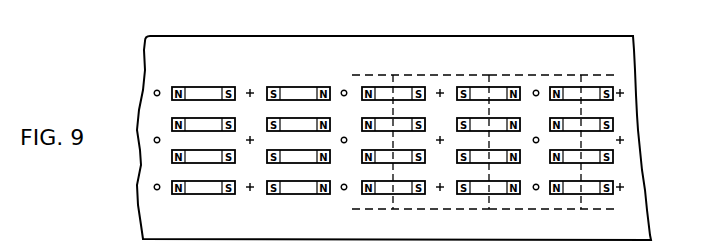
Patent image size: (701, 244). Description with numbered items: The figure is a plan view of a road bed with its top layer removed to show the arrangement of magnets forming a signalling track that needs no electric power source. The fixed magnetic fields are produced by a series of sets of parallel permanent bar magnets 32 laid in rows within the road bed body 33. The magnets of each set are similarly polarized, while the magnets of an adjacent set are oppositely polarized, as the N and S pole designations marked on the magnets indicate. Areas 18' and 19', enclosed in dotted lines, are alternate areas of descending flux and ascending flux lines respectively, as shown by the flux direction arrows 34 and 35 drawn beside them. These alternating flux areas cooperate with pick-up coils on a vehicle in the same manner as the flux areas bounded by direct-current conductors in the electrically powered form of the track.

The permanent bar magnets 32 is at (223, 87).
The plate 33 is at (622, 63).
The area of descending flux 18' is at (420, 127).
The area of ascending flux 19' is at (553, 127).
The flux direction arrow 34 is at (438, 192).
The flux direction arrow 35 is at (534, 194).